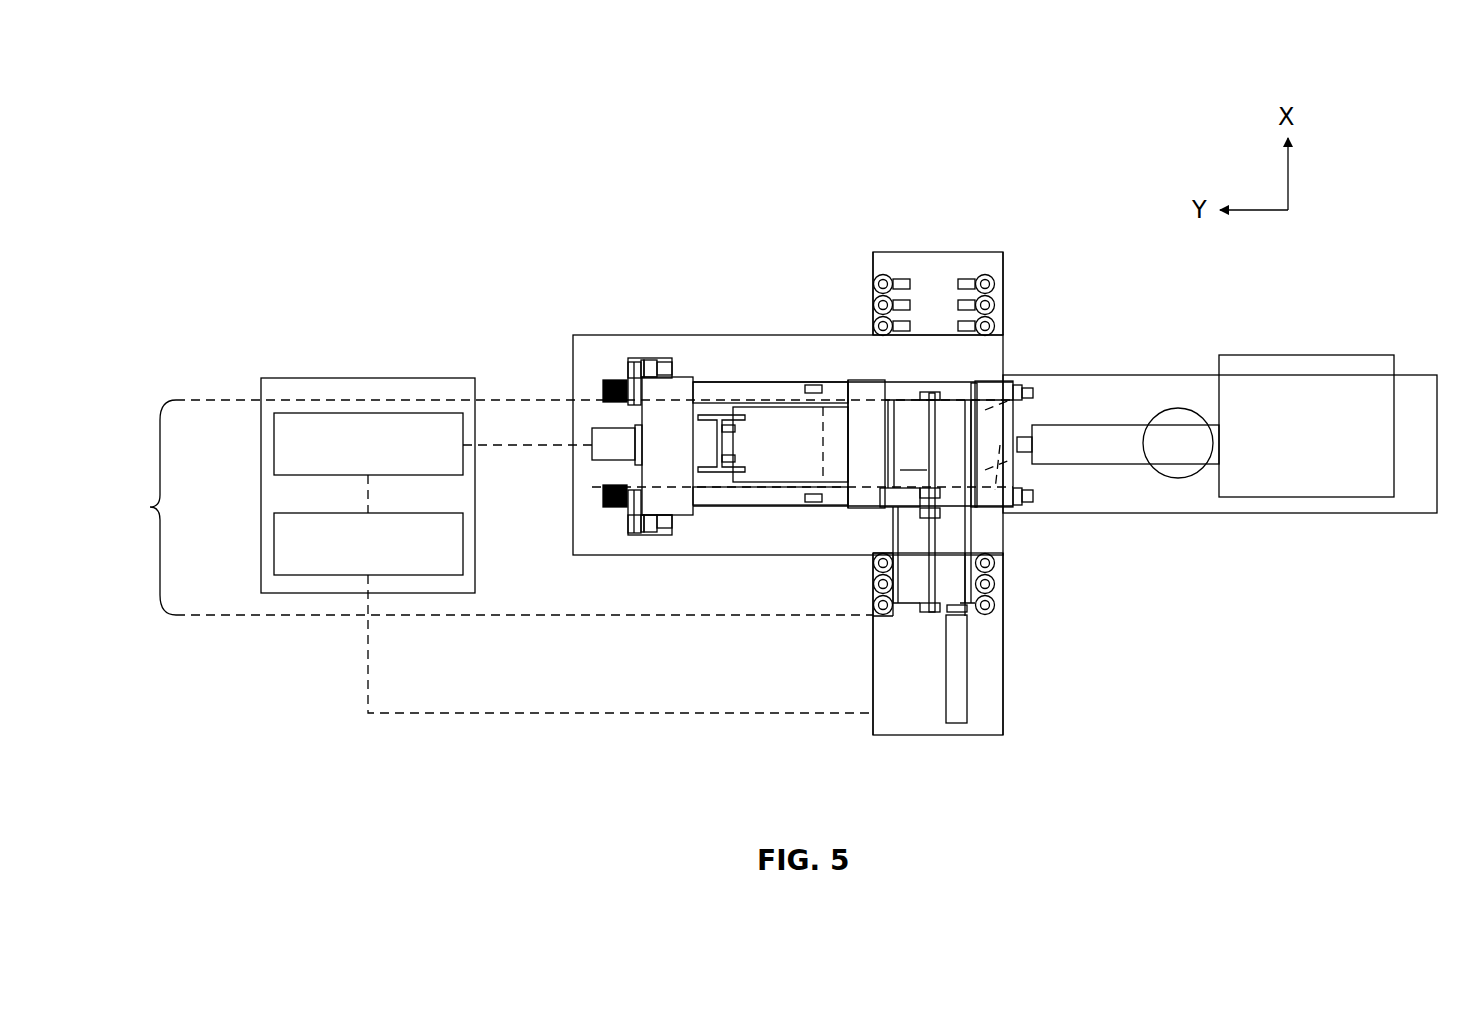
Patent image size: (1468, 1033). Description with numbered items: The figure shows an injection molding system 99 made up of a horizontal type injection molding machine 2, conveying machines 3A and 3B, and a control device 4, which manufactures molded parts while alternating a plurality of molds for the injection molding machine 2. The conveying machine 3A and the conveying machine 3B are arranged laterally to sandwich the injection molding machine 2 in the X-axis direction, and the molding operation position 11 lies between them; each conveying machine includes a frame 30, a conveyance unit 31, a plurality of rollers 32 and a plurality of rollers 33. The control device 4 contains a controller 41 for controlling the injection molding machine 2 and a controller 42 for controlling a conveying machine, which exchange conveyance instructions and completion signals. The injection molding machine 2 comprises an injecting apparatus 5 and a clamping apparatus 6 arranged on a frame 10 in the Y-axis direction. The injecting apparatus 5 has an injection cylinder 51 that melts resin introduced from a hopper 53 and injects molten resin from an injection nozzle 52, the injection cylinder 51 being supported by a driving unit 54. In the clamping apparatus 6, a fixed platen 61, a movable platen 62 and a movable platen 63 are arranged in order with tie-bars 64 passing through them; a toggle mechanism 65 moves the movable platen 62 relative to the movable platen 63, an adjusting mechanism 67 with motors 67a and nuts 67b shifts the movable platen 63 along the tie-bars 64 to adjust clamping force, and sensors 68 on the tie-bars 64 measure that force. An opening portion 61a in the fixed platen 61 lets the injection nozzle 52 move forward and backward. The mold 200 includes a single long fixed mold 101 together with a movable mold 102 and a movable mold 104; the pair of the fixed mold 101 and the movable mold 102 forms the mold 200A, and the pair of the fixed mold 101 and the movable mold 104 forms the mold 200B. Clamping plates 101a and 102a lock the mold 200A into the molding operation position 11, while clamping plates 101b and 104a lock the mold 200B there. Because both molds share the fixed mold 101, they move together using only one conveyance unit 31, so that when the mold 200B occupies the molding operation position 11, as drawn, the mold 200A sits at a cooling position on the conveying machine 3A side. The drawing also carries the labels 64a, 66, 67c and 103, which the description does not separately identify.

The injection molding machine 2 is at (1277, 574).
The conveying machine 3A is at (1014, 704).
The conveying machine 3B is at (1014, 236).
The control device 4 is at (282, 356).
The injecting apparatus 5 is at (1312, 341).
The clamping apparatus 6 is at (726, 330).
The frame 10 is at (1180, 375).
The molding operation position 11 is at (915, 457).
The frame 30 is at (923, 270).
The conveyance unit 31 is at (957, 724).
The rollers 32 is at (872, 284).
The rollers 33 is at (897, 282).
The controller 41 is at (273, 445).
The controller 42 is at (273, 545).
The injection cylinder 51 is at (1110, 432).
The injection nozzle 52 is at (1032, 445).
The hopper 53 is at (1180, 478).
The driving unit 54 is at (1250, 355).
The fixed platen 61 is at (1005, 512).
The opening portion 61a is at (1034, 497).
The movable platen 62 is at (848, 393).
The movable platen 63 is at (642, 410).
The tie-bars 64 is at (735, 390).
The spring 64a is at (608, 388).
The toggle mechanism 65 is at (717, 412).
The motor 66 is at (592, 446).
The adjusting mechanism 67 is at (636, 540).
The motors 67a is at (660, 360).
The nuts 67b is at (632, 368).
The spacer 67c is at (636, 366).
The sensors 68 is at (812, 385).
The injection molding system 99 is at (1188, 662).
The fixed mold 101 is at (985, 405).
The clamping plate 101a is at (968, 590).
The clamping plate 101b is at (1022, 393).
The movable mold 102 is at (910, 592).
The clamping plate 102a is at (897, 567).
The rod 103 is at (931, 392).
The movable mold 104 is at (905, 406).
The clamping plate 104a is at (848, 420).
The mold 200 is at (138, 507).
The mold 200A is at (966, 612).
The mold 200B is at (956, 395).